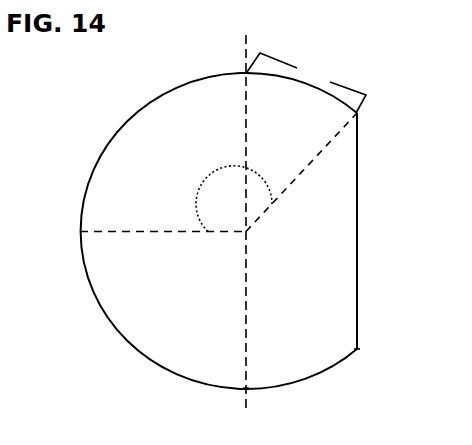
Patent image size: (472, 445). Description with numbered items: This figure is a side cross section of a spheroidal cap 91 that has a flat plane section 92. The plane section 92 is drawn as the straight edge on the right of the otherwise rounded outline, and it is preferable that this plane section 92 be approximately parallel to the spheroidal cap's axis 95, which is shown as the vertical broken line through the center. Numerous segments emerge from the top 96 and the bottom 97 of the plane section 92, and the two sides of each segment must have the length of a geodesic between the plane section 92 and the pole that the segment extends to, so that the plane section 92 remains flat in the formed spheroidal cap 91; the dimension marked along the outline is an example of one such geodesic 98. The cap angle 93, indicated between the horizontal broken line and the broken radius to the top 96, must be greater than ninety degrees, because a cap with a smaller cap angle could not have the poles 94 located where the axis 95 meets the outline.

The spheroidal cap 91 is at (94, 302).
The plane section 92 is at (358, 216).
The cap angle 93 is at (218, 206).
The poles 94 is at (244, 72).
The axis 95 is at (248, 41).
The top of plane section 96 is at (359, 114).
The bottom of plane section 97 is at (358, 348).
The geodesic 98 is at (306, 83).